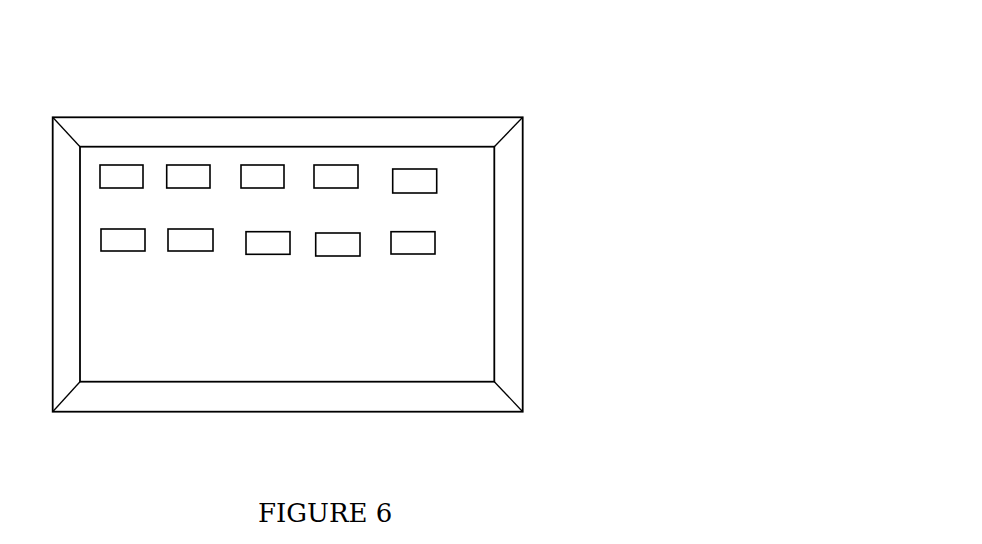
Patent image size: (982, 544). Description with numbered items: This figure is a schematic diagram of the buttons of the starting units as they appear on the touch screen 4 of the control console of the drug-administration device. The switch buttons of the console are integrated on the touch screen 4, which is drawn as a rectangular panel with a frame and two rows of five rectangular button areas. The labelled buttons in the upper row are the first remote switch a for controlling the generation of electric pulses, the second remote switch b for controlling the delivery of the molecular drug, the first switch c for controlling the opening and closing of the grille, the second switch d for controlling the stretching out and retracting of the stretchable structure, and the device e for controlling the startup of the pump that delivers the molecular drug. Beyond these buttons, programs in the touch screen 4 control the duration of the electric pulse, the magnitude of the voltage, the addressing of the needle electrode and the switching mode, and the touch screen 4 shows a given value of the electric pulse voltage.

The touch screen 4 is at (401, 309).
The first remote switch a is at (123, 182).
The second remote switch b is at (193, 177).
The first switch c is at (267, 183).
The second switch d is at (334, 178).
The device for controlling the startup of the pump e is at (402, 185).